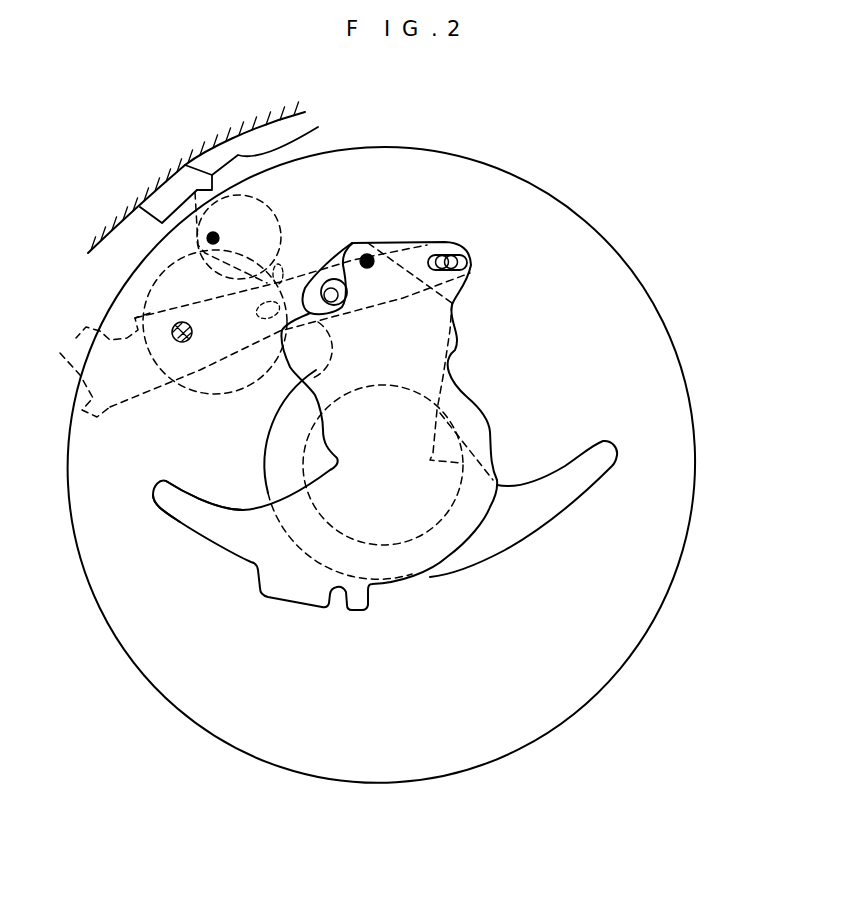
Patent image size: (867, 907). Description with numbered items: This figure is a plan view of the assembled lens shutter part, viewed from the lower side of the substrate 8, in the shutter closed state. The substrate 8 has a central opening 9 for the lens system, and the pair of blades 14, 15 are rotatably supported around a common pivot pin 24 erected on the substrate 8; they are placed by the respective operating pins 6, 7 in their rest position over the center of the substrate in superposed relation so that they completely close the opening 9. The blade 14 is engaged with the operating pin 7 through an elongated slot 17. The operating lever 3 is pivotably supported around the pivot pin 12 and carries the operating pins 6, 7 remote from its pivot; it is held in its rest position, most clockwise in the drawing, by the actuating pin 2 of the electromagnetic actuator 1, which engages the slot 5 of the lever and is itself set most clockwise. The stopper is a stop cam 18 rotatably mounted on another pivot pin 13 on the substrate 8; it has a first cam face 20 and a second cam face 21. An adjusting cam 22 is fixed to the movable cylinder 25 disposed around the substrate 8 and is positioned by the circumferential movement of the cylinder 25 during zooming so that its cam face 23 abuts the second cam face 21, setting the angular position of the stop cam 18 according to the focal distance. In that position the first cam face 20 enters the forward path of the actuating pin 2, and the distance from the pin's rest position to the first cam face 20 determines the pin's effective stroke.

The electromagnetic actuator 1 is at (203, 393).
The actuating pin 2 is at (257, 311).
The operating lever 3 is at (68, 366).
The slot 5 is at (270, 327).
The operating pin 6 is at (340, 305).
The operating pin 7 is at (443, 253).
The substrate 8 is at (620, 257).
The central opening 9 is at (460, 463).
The pivot pin 12 is at (175, 340).
The pivot pin 13 is at (262, 226).
The blade 14 is at (175, 518).
The blade 15 is at (617, 463).
The elongated slot 17 is at (467, 263).
The stop cam 18 is at (205, 218).
The first cam face 20 is at (283, 262).
The second cam face 21 is at (186, 162).
The adjusting cam 22 is at (152, 192).
The cam face 23 is at (309, 140).
The common pivot pin 24 is at (363, 256).
The movable cylinder 25 is at (240, 130).